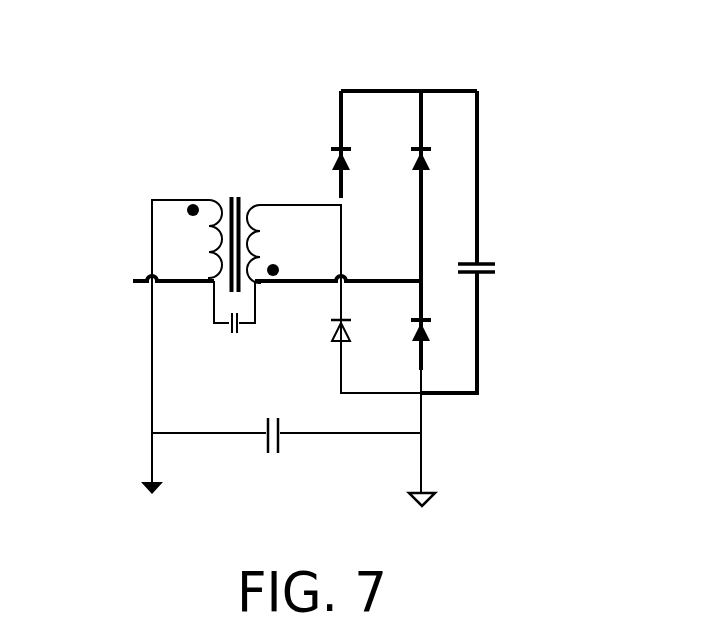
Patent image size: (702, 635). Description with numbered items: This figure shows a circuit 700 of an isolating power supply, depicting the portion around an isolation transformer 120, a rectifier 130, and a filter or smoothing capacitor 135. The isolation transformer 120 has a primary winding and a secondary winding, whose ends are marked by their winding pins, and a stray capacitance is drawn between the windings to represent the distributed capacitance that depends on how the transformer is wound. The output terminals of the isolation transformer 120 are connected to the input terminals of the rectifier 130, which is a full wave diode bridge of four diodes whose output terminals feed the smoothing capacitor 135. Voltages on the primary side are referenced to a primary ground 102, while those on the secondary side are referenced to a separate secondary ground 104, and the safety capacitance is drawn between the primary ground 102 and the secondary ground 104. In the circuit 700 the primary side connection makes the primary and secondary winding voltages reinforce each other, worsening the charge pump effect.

The circuit 700 is at (632, 83).
The primary ground 102 is at (129, 466).
The secondary ground 104 is at (401, 439).
The isolation transformer 120 is at (236, 167).
The rectifier 130 is at (316, 124).
The smoothing capacitor 135 is at (496, 240).